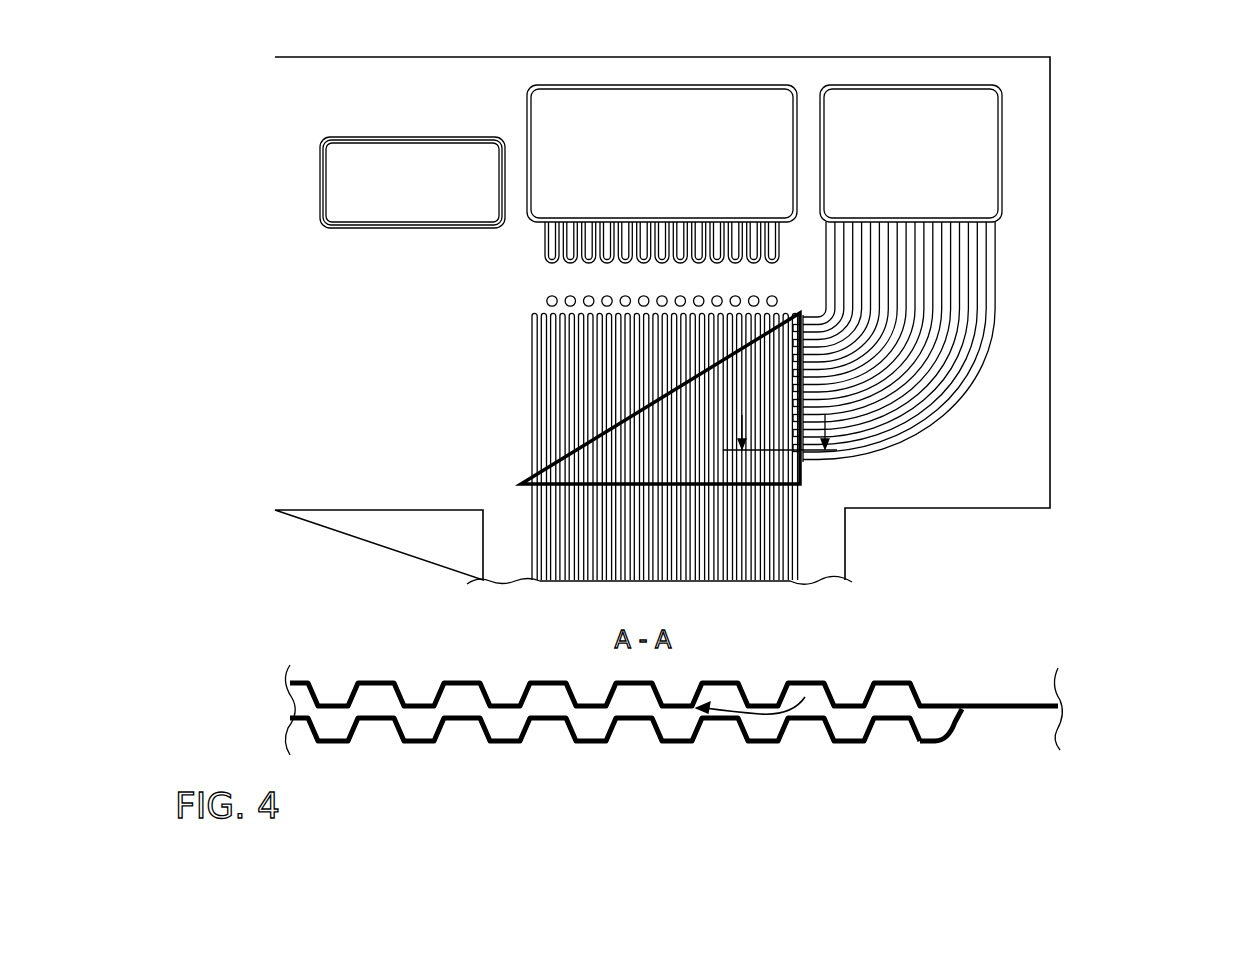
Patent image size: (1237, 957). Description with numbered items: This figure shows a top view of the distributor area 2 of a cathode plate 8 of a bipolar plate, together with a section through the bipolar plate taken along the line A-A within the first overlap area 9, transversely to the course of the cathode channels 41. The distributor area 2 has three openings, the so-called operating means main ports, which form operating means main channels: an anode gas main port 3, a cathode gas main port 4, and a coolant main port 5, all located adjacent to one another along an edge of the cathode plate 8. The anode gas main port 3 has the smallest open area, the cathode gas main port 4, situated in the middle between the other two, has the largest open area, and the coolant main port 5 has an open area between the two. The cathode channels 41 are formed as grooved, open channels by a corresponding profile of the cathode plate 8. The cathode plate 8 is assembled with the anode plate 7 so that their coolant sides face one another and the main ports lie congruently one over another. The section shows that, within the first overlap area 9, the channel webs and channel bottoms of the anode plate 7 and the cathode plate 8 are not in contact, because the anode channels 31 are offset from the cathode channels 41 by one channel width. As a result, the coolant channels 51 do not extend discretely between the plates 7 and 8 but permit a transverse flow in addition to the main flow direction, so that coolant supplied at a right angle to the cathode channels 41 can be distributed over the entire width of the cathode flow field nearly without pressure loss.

The distributor area 2 is at (1150, 109).
The anode gas main port 3 is at (450, 152).
The cathode gas main port 4 is at (645, 107).
The coolant main port 5 is at (862, 107).
The cathode channels 41 is at (540, 402).
The coolant channels 51 is at (985, 267).
The anode channels 31 is at (788, 754).
The first overlap area 9 is at (522, 484).
The cathode plate 8 is at (885, 683).
The anode plate 7 is at (850, 742).